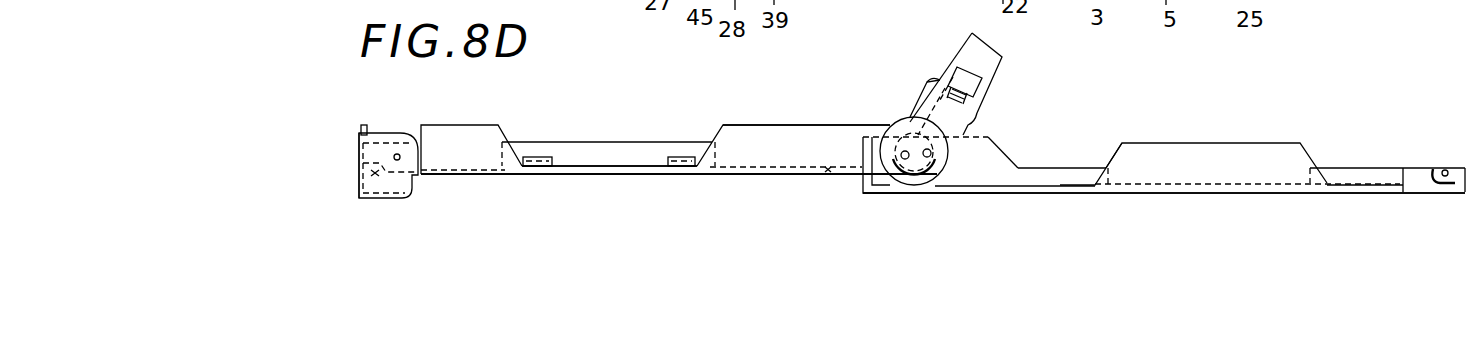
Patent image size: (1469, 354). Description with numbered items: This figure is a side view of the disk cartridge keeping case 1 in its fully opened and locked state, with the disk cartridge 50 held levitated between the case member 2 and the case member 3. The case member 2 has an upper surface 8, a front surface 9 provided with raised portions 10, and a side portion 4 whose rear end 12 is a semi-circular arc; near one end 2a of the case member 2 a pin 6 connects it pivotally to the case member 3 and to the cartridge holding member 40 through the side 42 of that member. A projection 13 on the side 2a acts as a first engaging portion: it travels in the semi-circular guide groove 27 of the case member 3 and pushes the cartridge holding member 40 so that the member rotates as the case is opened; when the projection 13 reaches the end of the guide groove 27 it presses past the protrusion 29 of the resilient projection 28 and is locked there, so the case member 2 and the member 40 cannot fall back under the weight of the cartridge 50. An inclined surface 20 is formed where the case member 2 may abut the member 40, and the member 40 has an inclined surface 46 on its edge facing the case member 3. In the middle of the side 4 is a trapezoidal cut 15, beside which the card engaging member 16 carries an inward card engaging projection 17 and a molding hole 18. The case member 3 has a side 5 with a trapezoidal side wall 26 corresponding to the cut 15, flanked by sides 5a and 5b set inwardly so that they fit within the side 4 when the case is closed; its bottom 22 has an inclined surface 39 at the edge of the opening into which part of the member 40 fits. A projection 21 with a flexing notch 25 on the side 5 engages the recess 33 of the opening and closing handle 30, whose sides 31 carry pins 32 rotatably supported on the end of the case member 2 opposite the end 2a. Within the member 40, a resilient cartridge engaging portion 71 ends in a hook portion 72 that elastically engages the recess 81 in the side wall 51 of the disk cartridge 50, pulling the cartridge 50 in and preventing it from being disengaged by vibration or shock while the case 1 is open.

The disk cartridge keeping case 1 is at (625, 75).
The case member 2 is at (652, 176).
The one end of the case member 2a is at (946, 166).
The case member 3 is at (1207, 192).
The side portion 4 is at (748, 163).
The side 5 is at (1073, 192).
The side 5a is at (1345, 178).
The side 5b is at (1082, 172).
The pin 6 is at (874, 118).
The upper surface 8 is at (490, 177).
The front surface 9 is at (358, 141).
The raised portion 10 is at (364, 130).
The rear end 12 is at (900, 148).
The projection 13 is at (947, 155).
The trapezoidal notch or cut 15 is at (540, 133).
The card engaging member 16 is at (614, 165).
The card engaging projection 17 is at (549, 149).
The hole 18 is at (537, 168).
The inclined surface 20 is at (829, 175).
The projection 21 is at (1444, 167).
The bottom 22 is at (1242, 183).
The notch 25 is at (1432, 184).
The trapezoidal side wall 26 is at (1258, 153).
The guide groove 27 is at (903, 182).
The resilient projection 28 is at (923, 186).
The protrusion 29 is at (945, 160).
The opening and closing handle 30 is at (388, 199).
The side 31 is at (410, 191).
The pin 32 is at (398, 154).
The recess 33 is at (372, 177).
The inclined surface 39 is at (962, 190).
The cartridge holding member 40 is at (930, 78).
The side 42 is at (920, 95).
The inclined surface 46 is at (980, 117).
The disk cartridge 50 is at (1002, 65).
The side wall 51 is at (987, 57).
The cartridge engaging portion 71 is at (922, 78).
The hook portion 72 is at (968, 87).
The recess 81 is at (948, 83).